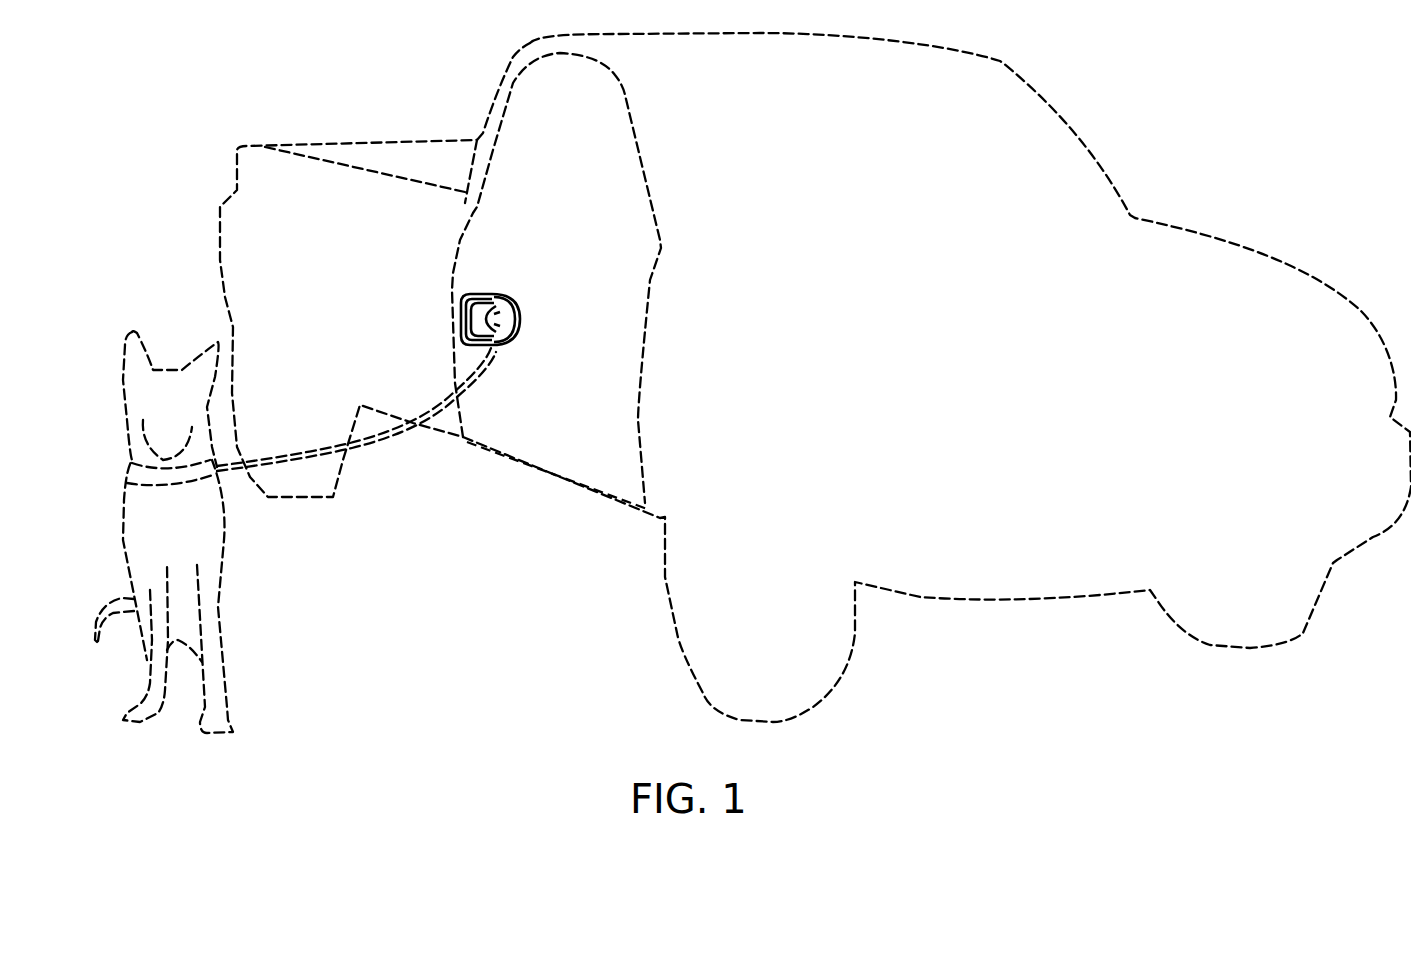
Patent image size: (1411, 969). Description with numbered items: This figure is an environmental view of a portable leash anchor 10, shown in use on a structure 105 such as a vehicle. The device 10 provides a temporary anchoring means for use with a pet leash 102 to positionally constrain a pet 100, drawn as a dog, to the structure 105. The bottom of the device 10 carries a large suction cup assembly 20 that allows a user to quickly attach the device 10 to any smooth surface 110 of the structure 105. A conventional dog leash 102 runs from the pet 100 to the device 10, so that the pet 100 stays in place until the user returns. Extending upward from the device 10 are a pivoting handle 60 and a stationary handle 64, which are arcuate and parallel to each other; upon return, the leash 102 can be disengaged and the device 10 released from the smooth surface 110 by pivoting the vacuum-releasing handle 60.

The portable leash anchor 10 is at (496, 288).
The suction cup assembly 20 is at (520, 314).
The pivoting handle 60 is at (516, 282).
The stationary handle 64 is at (483, 294).
The pet 100 is at (210, 532).
The leash 102 is at (388, 438).
The structure 105 is at (1030, 88).
The smooth surface 110 is at (538, 387).